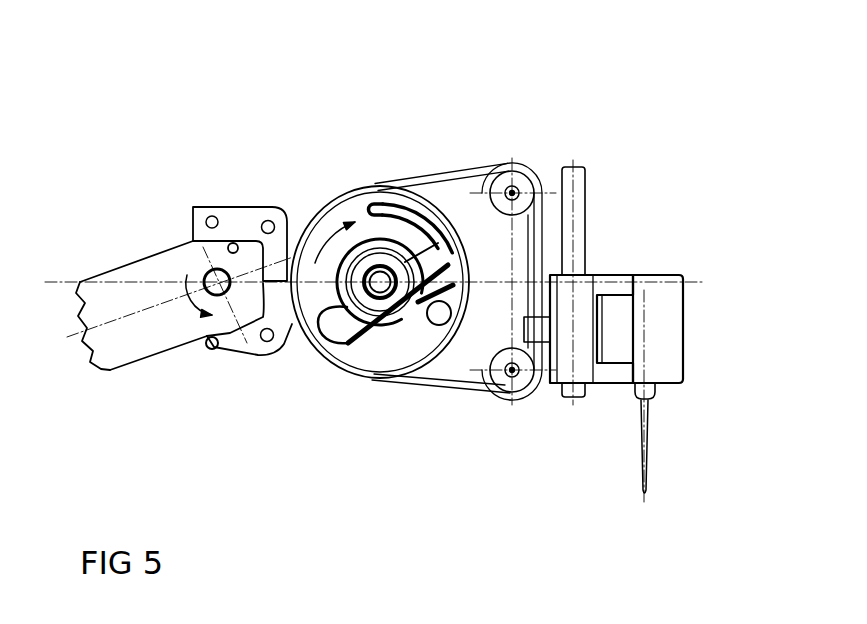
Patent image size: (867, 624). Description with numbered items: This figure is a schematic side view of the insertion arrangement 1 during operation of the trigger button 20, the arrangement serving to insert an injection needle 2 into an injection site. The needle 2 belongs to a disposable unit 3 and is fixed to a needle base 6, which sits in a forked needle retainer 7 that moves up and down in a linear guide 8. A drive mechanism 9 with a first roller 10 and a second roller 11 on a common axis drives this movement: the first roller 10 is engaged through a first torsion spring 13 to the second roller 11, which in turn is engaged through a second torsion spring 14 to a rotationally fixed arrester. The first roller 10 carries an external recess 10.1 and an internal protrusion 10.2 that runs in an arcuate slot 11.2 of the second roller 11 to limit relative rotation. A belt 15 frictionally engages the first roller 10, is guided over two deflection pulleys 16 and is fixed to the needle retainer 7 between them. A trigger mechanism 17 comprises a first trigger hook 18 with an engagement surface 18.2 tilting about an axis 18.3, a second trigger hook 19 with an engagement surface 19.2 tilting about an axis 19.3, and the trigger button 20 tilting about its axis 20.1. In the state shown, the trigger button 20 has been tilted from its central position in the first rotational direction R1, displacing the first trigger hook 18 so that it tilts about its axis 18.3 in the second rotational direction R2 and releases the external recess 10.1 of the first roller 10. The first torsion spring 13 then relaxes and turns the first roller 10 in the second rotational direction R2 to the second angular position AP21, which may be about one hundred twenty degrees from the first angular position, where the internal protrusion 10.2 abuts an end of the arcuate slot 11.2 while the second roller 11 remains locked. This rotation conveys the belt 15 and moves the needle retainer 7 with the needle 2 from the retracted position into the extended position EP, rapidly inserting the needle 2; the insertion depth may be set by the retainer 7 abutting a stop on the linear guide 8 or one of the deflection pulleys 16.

The insertion arrangement 1 is at (167, 107).
The injection needle 2 is at (648, 463).
The disposable unit 3 is at (664, 296).
The needle base 6 is at (675, 305).
The needle retainer 7 is at (612, 283).
The linear guide 8 is at (573, 167).
The drive mechanism 9 is at (410, 128).
The first roller 10 is at (433, 205).
The second roller 11 is at (460, 100).
The external recess 10.1 is at (455, 240).
The internal protrusion 10.2 is at (422, 325).
The arcuate slot 11.2 is at (440, 325).
The first torsion spring 13 is at (357, 345).
The second torsion spring 14 is at (405, 335).
The belt 15 is at (465, 386).
The deflection pulleys 16 is at (517, 178).
The trigger mechanism 17 is at (237, 206).
The first trigger hook 18 is at (241, 206).
The engagement surface 18.2 is at (211, 215).
The axis 18.3 is at (269, 220).
The second trigger hook 19 is at (246, 342).
The engagement surface 19.2 is at (212, 350).
The axis 19.3 is at (268, 342).
The trigger button 20 is at (110, 340).
The axis 20.1 is at (204, 273).
The first rotational direction R1 is at (186, 277).
The second rotational direction R2 is at (342, 222).
The extended position EP is at (658, 389).
The second angular position AP21 is at (470, 254).